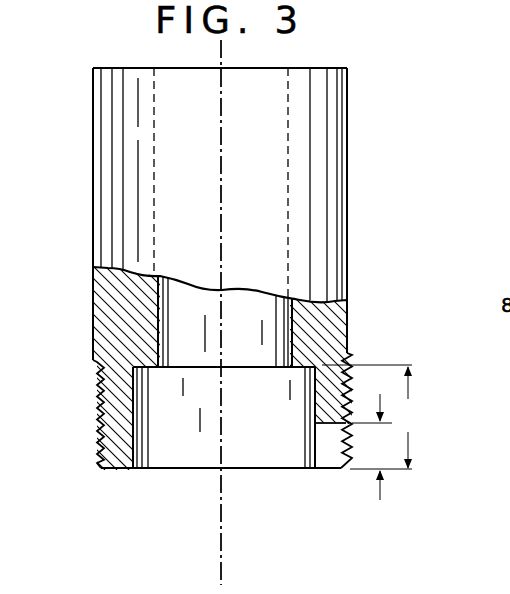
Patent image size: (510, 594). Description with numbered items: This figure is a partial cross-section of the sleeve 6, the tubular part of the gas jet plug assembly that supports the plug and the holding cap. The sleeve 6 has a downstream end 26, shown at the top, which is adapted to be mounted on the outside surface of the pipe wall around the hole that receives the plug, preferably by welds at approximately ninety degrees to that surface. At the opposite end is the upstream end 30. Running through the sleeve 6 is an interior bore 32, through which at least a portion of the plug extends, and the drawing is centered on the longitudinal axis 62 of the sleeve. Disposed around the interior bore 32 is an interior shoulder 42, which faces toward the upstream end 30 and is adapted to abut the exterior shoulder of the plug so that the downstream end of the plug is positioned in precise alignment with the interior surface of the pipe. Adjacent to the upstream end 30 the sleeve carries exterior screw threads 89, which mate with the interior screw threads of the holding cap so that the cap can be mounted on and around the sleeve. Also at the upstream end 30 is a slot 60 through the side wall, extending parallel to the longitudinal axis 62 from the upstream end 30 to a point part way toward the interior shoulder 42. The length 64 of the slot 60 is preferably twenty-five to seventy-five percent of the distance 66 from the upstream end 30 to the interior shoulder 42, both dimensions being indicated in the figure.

The sleeve 6 is at (354, 175).
The downstream end 26 is at (319, 67).
The longitudinal axis 62 is at (221, 205).
The interior bore 32 is at (252, 335).
The interior shoulder 42 is at (152, 372).
The exterior screw threads 89 is at (100, 392).
The upstream end 30 is at (176, 469).
The slot 60 is at (328, 447).
The distance from upstream end to interior shoulder 66 is at (372, 416).
The length of the slot 64 is at (381, 447).